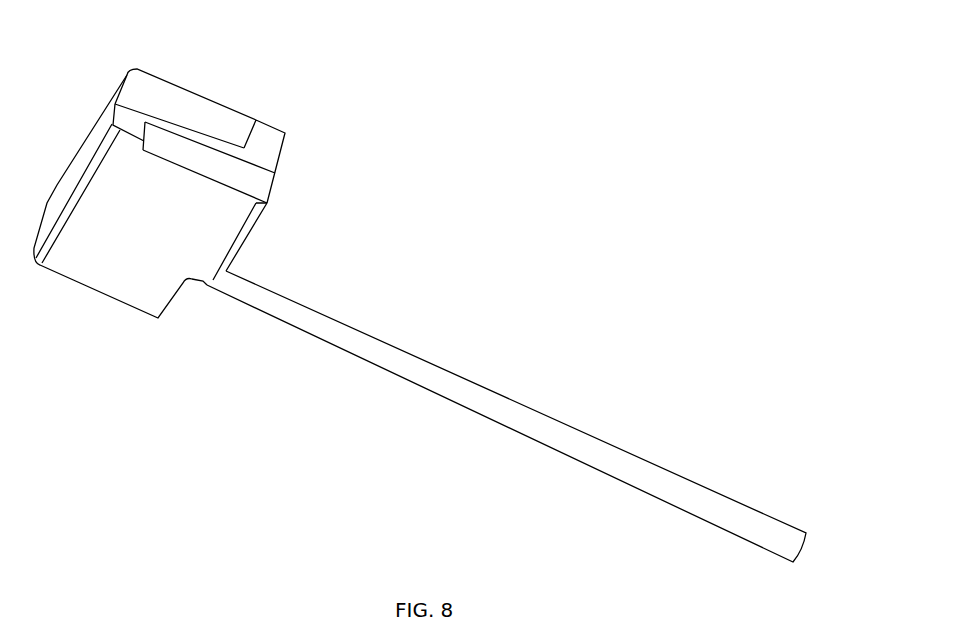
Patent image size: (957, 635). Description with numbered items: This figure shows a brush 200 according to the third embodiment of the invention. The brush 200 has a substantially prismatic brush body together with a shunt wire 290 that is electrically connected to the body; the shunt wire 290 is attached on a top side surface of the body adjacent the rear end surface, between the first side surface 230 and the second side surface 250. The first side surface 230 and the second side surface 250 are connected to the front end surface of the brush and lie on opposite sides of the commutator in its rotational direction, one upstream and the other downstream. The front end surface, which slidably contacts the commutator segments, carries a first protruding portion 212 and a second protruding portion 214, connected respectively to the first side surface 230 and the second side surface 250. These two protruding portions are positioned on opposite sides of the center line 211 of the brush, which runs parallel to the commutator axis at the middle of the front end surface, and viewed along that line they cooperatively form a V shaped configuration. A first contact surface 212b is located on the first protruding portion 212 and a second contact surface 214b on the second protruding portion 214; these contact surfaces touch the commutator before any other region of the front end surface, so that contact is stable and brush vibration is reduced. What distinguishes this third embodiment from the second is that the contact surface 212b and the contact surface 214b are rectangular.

The brush 200 is at (482, 168).
The center line 211 is at (277, 174).
The first protruding portion 212 is at (150, 94).
The first contact surface 212b is at (268, 147).
The second protruding portion 214 is at (218, 168).
The second contact surface 214b is at (132, 127).
The first side surface 230 is at (194, 97).
The second side surface 250 is at (123, 253).
The shunt wire 290 is at (492, 392).